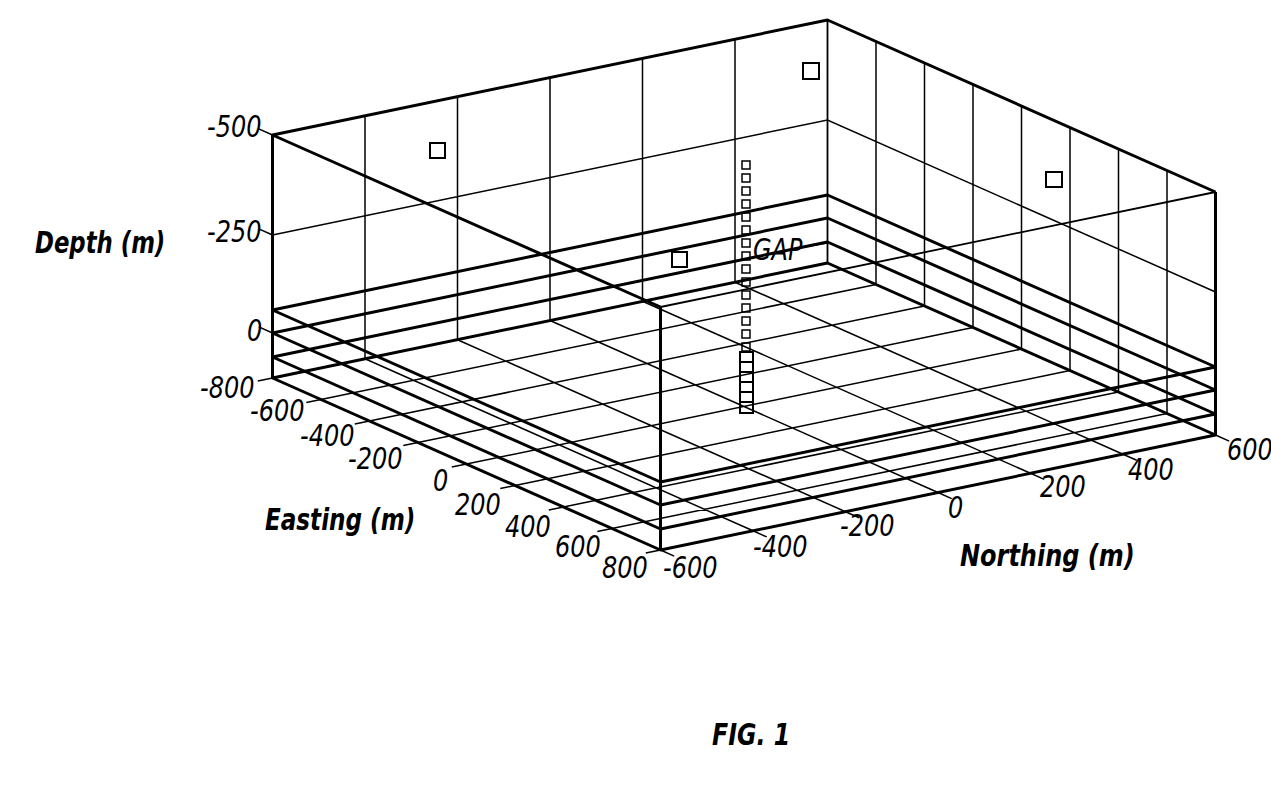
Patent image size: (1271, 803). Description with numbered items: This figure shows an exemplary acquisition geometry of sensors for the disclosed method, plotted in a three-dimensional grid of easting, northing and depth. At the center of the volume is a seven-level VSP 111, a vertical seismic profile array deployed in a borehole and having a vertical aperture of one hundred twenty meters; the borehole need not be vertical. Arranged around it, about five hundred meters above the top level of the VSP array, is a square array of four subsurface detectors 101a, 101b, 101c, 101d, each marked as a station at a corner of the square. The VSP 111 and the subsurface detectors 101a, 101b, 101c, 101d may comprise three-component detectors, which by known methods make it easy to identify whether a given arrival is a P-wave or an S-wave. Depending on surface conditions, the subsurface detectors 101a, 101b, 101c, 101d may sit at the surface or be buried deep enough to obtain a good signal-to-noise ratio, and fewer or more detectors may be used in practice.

The subsurface detector 101a is at (819, 71).
The subsurface detector 101b is at (1062, 179).
The subsurface detector 101c is at (672, 259).
The subsurface detector 101d is at (430, 151).
The seven-level VSP 111 is at (740, 412).